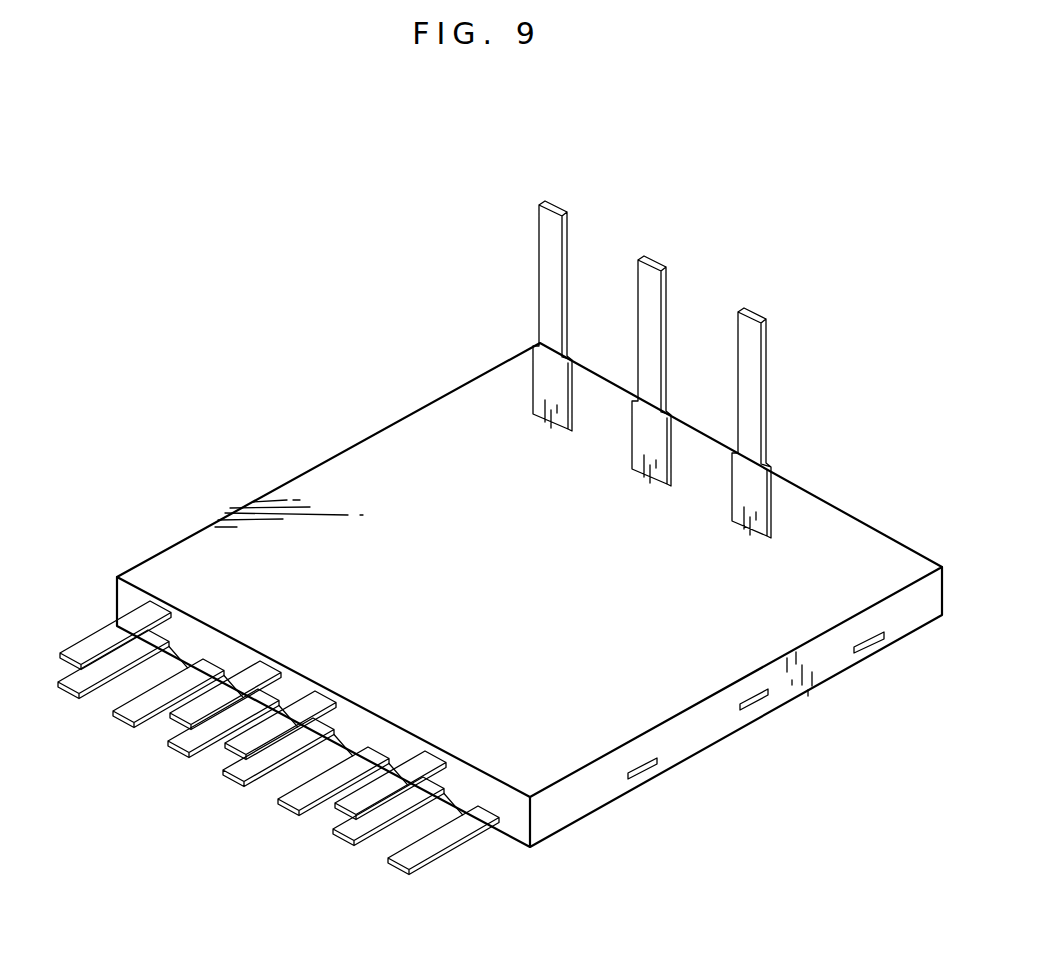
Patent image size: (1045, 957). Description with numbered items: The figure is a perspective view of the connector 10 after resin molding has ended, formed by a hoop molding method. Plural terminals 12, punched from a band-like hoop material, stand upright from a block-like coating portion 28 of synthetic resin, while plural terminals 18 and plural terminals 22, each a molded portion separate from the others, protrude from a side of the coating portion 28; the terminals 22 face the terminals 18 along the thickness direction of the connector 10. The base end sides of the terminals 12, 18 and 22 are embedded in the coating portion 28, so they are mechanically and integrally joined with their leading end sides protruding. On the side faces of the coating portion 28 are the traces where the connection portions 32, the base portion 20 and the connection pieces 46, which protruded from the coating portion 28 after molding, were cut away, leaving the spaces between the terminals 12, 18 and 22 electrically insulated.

The connector 10 is at (716, 271).
The terminals 12 is at (548, 209).
The terminals 18 is at (77, 690).
The base portion 20 is at (648, 779).
The terminals 22 is at (100, 642).
The coating portion 28 is at (428, 407).
The connection portions 32 is at (872, 653).
The connection pieces 46 is at (762, 709).